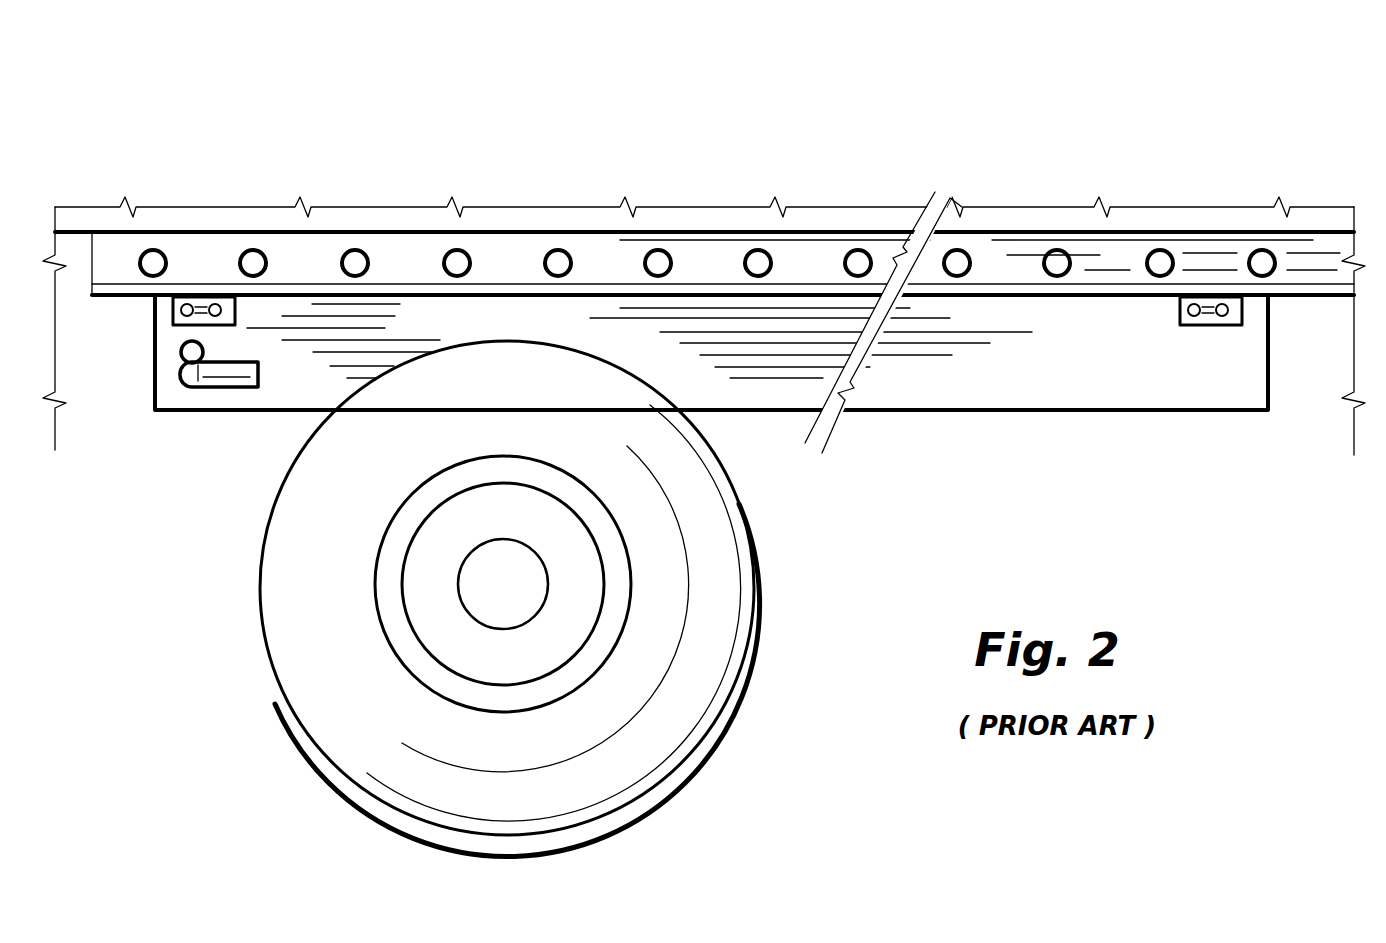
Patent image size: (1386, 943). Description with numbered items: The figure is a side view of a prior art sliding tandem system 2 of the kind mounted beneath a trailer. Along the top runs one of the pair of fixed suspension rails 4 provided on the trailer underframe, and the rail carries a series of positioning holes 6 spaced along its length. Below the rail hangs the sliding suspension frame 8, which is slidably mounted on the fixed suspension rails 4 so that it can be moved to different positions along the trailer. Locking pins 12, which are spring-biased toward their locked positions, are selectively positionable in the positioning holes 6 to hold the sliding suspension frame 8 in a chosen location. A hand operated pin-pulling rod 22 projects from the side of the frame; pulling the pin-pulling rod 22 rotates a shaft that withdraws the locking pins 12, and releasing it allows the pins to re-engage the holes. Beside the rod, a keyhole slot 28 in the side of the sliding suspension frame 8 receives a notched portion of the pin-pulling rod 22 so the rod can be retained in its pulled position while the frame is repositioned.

The sliding tandem system 2 is at (536, 147).
The fixed suspension rail 4 is at (1152, 233).
The positioning holes 6 is at (460, 257).
The sliding suspension frame 8 is at (740, 395).
The locking pins 12 is at (250, 257).
The pin-pulling rod 22 is at (242, 380).
The keyhole slot 28 is at (179, 353).